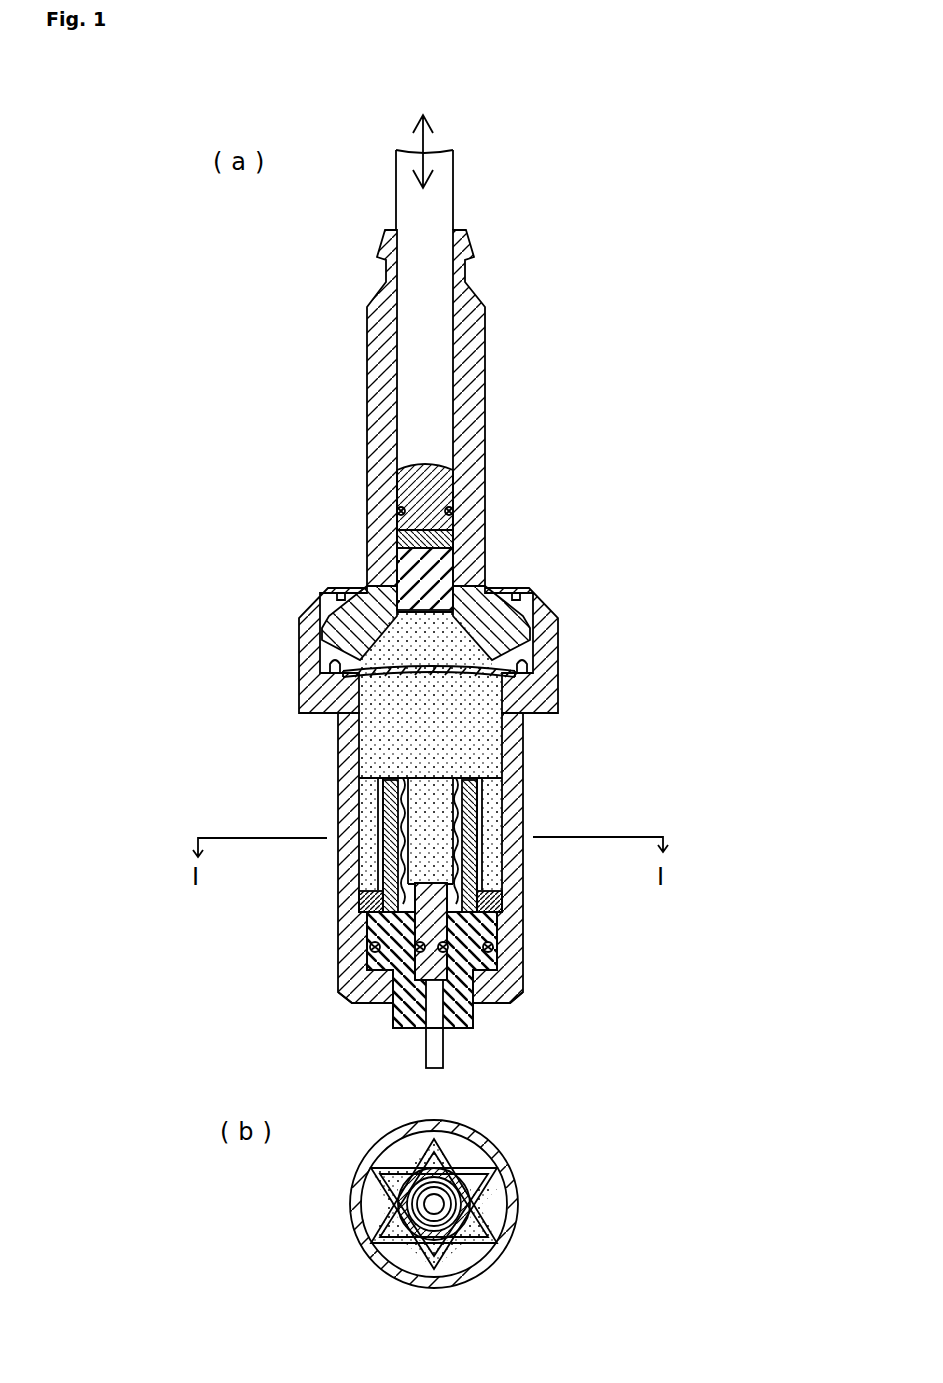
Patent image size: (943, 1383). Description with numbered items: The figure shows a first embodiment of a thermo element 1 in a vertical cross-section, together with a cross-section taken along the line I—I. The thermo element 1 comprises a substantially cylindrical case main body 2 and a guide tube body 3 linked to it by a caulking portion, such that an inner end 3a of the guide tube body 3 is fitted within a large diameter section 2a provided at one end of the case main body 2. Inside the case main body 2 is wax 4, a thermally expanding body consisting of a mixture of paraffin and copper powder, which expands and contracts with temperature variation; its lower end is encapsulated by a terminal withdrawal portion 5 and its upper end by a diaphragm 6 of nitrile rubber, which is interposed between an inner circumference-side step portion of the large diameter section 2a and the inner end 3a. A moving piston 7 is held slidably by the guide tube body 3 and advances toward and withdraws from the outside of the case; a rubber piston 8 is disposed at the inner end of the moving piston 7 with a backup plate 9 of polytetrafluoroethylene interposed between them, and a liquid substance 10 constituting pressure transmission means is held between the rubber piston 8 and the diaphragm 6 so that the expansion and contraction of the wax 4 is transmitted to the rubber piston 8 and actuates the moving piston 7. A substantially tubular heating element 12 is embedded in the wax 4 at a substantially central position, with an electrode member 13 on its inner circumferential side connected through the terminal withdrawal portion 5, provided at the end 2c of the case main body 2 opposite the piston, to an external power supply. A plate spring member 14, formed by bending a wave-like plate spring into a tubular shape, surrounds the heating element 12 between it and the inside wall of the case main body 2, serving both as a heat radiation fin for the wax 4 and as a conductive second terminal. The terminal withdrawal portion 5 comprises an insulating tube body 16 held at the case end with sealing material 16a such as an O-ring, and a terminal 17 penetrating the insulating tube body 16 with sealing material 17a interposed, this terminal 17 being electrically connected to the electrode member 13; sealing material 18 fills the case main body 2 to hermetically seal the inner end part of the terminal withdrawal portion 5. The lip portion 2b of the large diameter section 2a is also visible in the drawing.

The thermo element 1 is at (344, 470).
The case main body 2 is at (515, 783).
The large diameter section 2a is at (560, 672).
The lip portion of housing 2b is at (533, 603).
The end of the case main body 2c is at (523, 992).
The guide tube body 3 is at (478, 400).
The inner end of the guide tube body 3a is at (530, 627).
The wax 4 is at (370, 720).
The terminal withdrawal portion 5 is at (353, 948).
The diaphragm 6 is at (332, 662).
The moving piston 7 is at (437, 344).
The rubber piston 8 is at (448, 573).
The backup plate 9 is at (448, 535).
The liquid substance 10 is at (380, 587).
The heating element 12 is at (478, 818).
The electrode member 13 is at (458, 858).
The plate spring member 14 is at (378, 797).
The insulating tube body 16 is at (475, 1008).
The sealing material 16a is at (494, 947).
The terminal 17 is at (435, 1043).
The sealing material 17a is at (365, 1002).
The sealing material 18 is at (372, 898).